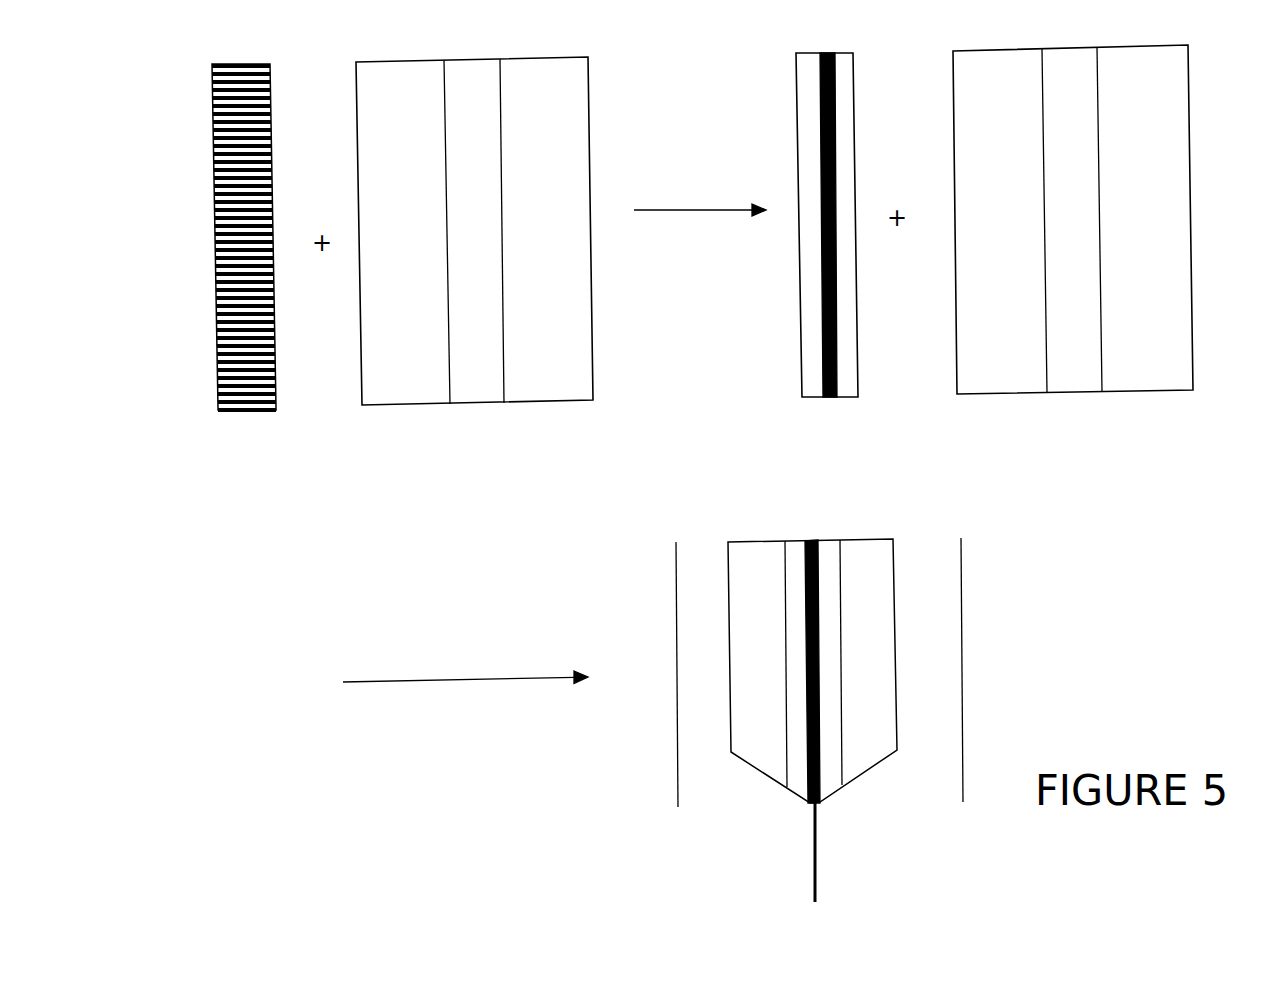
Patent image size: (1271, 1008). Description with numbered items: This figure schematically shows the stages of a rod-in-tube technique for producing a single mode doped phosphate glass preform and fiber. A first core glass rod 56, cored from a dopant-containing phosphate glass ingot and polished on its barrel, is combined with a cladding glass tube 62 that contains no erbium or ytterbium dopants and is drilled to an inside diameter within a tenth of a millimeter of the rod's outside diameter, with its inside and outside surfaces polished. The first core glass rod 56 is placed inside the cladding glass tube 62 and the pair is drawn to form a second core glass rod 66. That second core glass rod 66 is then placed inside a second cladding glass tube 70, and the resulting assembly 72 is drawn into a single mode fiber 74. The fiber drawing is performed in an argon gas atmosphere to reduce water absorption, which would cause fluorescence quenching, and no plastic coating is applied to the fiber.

The first core glass rod 56 is at (262, 375).
The cladding glass tube 62 is at (548, 368).
The second core glass rod 66 is at (813, 353).
The second cladding glass tube 70 is at (1147, 335).
The assembly 72 is at (646, 811).
The single mode fiber 74 is at (810, 848).